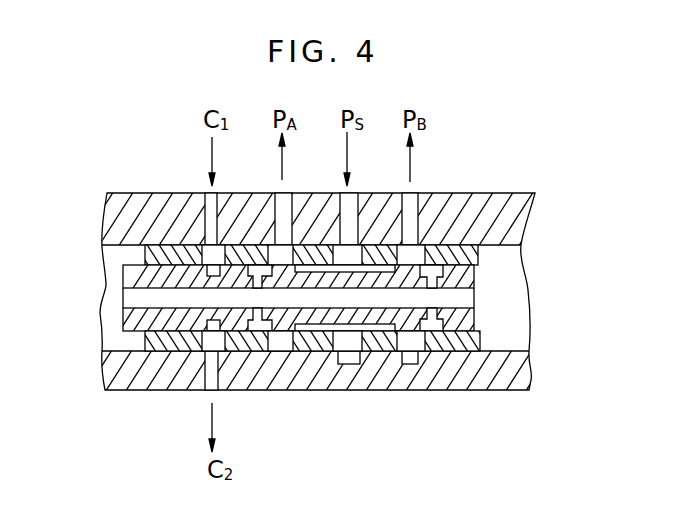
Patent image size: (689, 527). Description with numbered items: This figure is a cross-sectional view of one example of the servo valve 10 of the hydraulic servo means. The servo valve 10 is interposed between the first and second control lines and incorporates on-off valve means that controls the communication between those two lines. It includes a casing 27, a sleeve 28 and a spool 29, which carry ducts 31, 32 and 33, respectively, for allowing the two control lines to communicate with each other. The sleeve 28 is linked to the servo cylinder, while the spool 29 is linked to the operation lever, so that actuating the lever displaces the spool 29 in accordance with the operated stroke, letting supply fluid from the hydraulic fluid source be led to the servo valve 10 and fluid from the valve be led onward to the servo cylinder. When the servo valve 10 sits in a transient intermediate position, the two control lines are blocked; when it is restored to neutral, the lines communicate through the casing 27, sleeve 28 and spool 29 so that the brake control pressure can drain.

The servo valve 10 is at (537, 212).
The casing 27 is at (502, 201).
The sleeve 28 is at (478, 248).
The spool 29 is at (474, 275).
The duct 31 is at (210, 213).
The duct 32 is at (203, 250).
The duct 33 is at (212, 272).